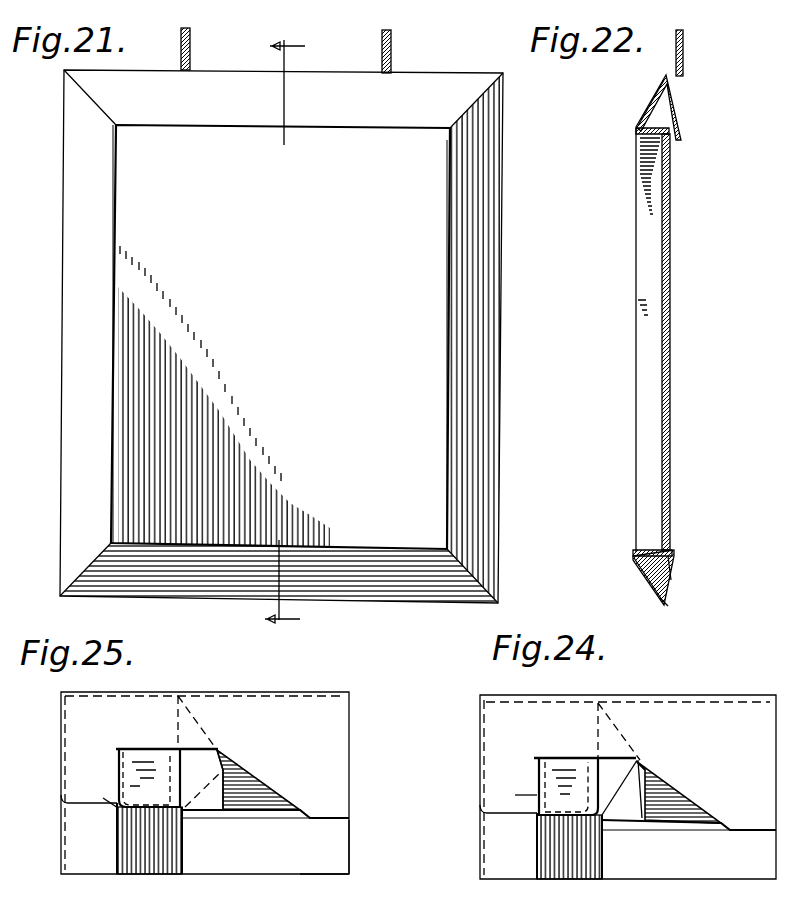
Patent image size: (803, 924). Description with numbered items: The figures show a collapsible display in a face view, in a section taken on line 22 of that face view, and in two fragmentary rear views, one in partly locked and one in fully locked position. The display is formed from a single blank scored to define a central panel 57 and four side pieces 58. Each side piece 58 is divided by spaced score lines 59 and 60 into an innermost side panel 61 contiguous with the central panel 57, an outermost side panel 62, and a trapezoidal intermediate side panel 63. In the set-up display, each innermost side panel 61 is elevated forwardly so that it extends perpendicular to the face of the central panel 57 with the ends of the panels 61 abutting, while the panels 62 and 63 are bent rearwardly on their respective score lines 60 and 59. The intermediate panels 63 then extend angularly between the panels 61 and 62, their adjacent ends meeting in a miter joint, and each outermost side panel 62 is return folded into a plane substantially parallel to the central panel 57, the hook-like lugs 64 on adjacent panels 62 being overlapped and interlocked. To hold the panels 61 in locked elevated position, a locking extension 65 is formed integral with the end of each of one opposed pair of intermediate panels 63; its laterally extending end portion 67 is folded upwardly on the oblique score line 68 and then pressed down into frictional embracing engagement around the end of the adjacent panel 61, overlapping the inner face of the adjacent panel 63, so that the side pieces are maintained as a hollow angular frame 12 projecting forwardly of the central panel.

In FIG. 25, the frame section 12 is at (335, 846).
In FIG. 21, the section line 22— 22 is at (285, 330).
In FIG. 21, the central panel 57 is at (300, 301).
In FIG. 22, the central panel 57 is at (670, 290).
In FIG. 25, the central panel 57 is at (303, 866).
In FIG. 24, the central panel 57 is at (721, 876).
In FIG. 25, the side piece 58 is at (345, 899).
In FIG. 21, the score line 59 is at (448, 357).
In FIG. 22, the score line 59 is at (636, 132).
In FIG. 22, the score line 60 is at (664, 605).
In FIG. 22, the innermost side panel 61 is at (651, 192).
In FIG. 22, the outermost side panel 62 is at (676, 108).
In FIG. 25, the outermost side panel 62 is at (327, 742).
In FIG. 24, the outermost side panel 62 is at (742, 715).
In FIG. 21, the intermediate side panel 63 is at (383, 108).
In FIG. 22, the intermediate side panel 63 is at (645, 107).
In FIG. 25, the intermediate side panel 63 is at (268, 798).
In FIG. 24, the intermediate side panel 63 is at (678, 805).
In FIG. 22, the hook-like lug 64 is at (672, 576).
In FIG. 25, the hook-like lug 64 is at (172, 798).
In FIG. 24, the hook-like lug 64 is at (585, 808).
In FIG. 25, the locking extension 65 is at (210, 763).
In FIG. 24, the locking extension 65 is at (643, 770).
In FIG. 25, the end portion 67 is at (230, 786).
In FIG. 24, the end portion 67 is at (645, 794).
In FIG. 25, the oblique score line 68 is at (205, 786).
In FIG. 24, the oblique score line 68 is at (608, 792).